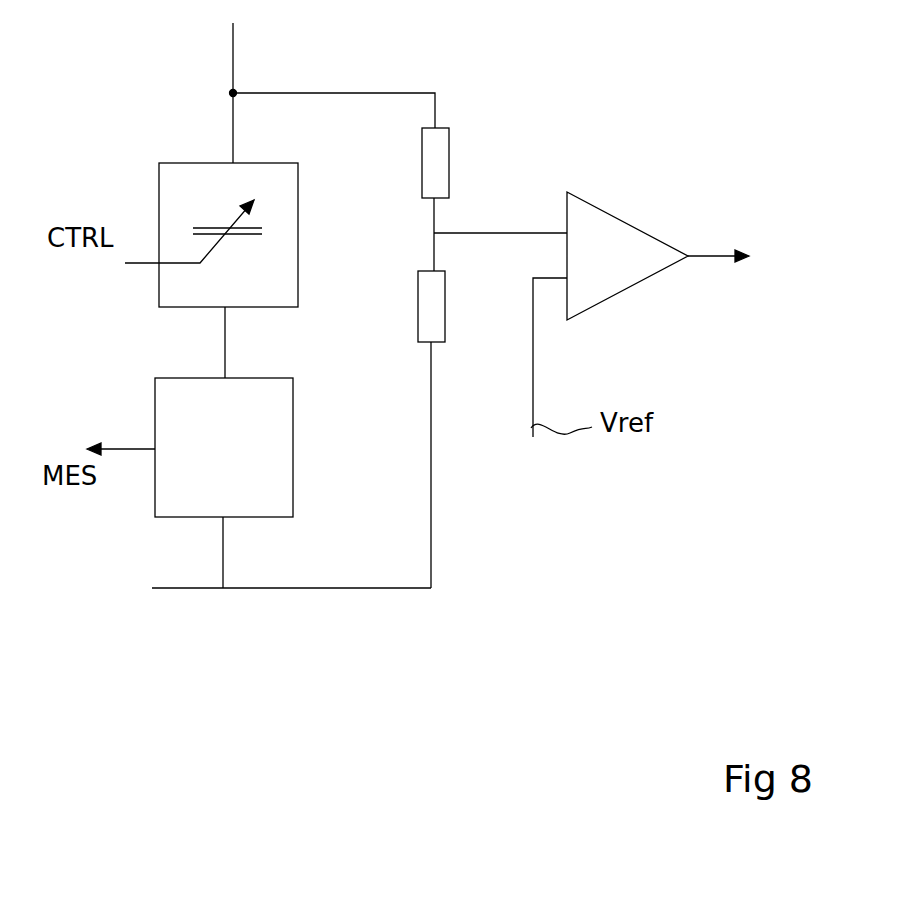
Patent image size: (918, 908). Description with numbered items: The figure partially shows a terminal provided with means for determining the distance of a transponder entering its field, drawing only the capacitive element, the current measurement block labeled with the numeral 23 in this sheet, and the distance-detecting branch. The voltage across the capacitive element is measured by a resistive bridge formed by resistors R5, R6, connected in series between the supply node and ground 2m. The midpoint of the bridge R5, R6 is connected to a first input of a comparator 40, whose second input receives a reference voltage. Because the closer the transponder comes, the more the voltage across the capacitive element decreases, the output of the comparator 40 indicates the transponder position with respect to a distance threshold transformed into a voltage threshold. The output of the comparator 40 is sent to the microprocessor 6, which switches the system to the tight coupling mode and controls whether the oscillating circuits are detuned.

The comparator 40 is at (620, 215).
The current measuring block 23 is at (294, 413).
The microprocessor 6 is at (749, 256).
The ground 2m is at (312, 588).
The resistor R5 is at (454, 163).
The resistor R6 is at (452, 306).